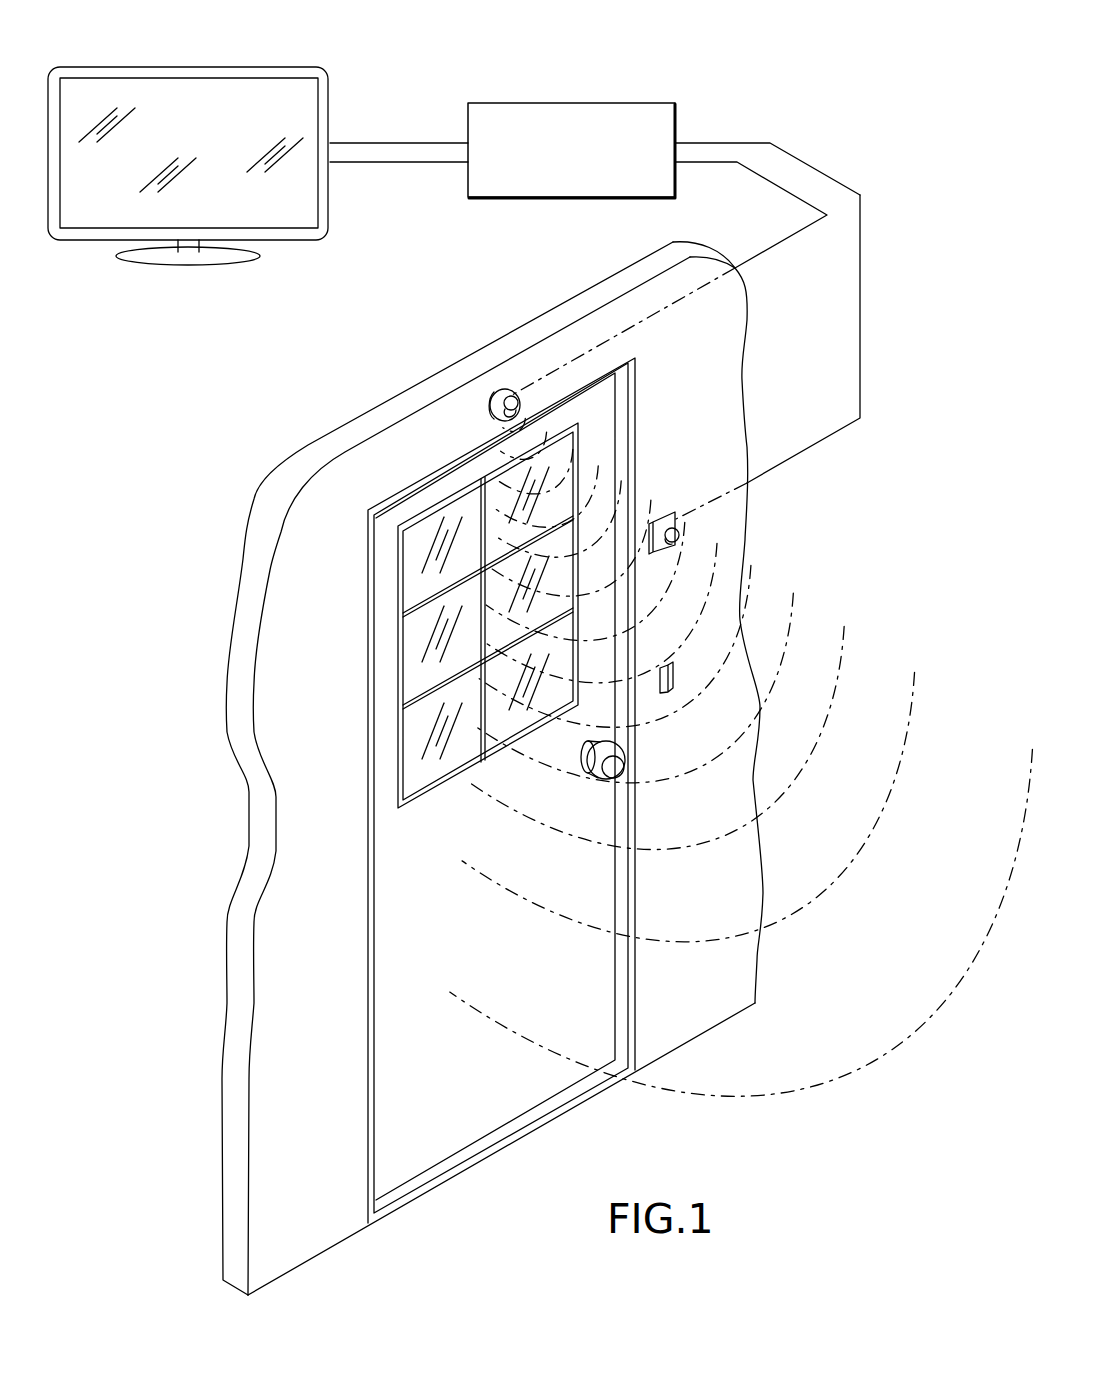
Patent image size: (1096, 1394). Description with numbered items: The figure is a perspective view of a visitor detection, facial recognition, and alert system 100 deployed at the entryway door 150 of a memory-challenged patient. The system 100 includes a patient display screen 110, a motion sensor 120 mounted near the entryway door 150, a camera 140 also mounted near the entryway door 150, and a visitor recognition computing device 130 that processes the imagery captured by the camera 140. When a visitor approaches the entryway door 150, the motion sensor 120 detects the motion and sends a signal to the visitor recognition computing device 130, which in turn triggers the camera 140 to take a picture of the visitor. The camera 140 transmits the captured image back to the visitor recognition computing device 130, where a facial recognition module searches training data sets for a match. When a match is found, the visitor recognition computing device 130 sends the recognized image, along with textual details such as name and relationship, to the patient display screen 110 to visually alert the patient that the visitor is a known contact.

The visitor detection, facial recognition, and alert system 100 is at (772, 104).
The patient display screen 110 is at (62, 240).
The motion sensor 120 is at (505, 388).
The visitor recognition computing device 130 is at (508, 88).
The camera 140 is at (675, 538).
The entryway door 150 is at (452, 1122).